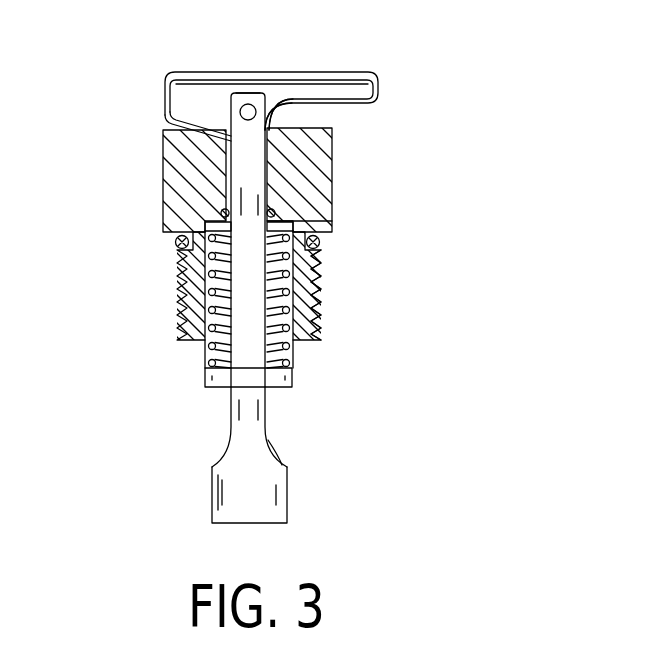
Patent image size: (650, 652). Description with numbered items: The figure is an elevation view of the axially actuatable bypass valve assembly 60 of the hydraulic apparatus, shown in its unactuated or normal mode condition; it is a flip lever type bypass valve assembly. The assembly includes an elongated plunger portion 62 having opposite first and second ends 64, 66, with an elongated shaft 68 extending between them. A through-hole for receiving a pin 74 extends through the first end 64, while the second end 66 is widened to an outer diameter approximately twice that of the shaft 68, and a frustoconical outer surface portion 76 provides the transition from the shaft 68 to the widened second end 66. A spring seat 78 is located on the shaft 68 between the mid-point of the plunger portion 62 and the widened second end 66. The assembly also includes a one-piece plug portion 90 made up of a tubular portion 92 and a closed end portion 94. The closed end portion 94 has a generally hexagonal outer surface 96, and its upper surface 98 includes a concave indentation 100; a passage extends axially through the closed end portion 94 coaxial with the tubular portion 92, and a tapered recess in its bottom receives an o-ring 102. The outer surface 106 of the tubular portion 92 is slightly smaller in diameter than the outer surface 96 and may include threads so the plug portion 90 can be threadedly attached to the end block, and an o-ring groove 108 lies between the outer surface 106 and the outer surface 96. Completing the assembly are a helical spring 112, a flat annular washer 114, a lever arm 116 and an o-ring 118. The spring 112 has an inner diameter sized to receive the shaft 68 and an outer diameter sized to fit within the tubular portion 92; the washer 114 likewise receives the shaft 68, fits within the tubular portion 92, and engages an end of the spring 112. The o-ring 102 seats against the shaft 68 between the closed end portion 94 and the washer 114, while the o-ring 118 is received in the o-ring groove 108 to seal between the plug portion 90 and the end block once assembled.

The bypass valve assembly 60 is at (113, 128).
The plunger portion 62 is at (252, 158).
The first end 64 is at (246, 104).
The second end 66 is at (238, 510).
The shaft 68 is at (300, 130).
The pin 74 is at (252, 108).
The frustoconical outer surface portion 76 is at (265, 447).
The spring seat 78 is at (290, 377).
The plug portion 90 is at (156, 160).
The tubular portion 92 is at (185, 290).
The closed end portion 94 is at (322, 182).
The hexagonal outer surface 96 is at (333, 205).
The upper surface 98 is at (325, 127).
The concave indentation 100 is at (249, 235).
The o-ring 102 is at (220, 212).
The outer surface 106 is at (318, 307).
The o-ring groove 108 is at (320, 255).
The spring 112 is at (318, 270).
The washer 114 is at (332, 221).
The lever arm 116 is at (190, 97).
The o-ring 118 is at (175, 243).